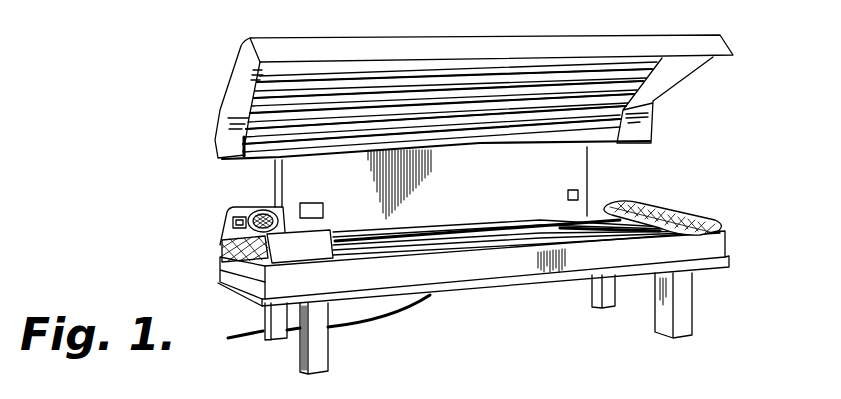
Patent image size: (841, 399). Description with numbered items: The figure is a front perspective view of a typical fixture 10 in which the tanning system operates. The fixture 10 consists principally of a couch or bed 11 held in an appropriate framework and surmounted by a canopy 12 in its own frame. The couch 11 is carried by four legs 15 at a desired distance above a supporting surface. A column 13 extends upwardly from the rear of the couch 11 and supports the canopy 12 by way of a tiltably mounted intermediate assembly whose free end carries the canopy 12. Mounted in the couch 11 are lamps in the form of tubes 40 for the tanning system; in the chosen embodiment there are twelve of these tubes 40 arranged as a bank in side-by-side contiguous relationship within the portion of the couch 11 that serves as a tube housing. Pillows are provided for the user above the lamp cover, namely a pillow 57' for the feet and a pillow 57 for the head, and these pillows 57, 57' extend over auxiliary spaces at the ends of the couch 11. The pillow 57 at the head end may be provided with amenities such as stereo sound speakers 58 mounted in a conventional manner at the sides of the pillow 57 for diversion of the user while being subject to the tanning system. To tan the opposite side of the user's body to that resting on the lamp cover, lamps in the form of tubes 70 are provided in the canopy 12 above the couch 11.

The fixture 10 is at (192, 183).
The couch or bed 11 is at (478, 266).
The canopy 12 is at (672, 79).
The column 13 is at (277, 181).
The legs 15 is at (322, 357).
The tubes 40 is at (533, 238).
The pillow 57 is at (203, 250).
The pillow 57' is at (662, 197).
The stereo sound speakers 58 is at (283, 217).
The tubes 70 is at (523, 102).